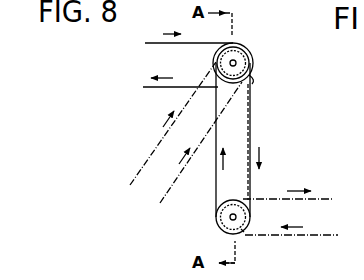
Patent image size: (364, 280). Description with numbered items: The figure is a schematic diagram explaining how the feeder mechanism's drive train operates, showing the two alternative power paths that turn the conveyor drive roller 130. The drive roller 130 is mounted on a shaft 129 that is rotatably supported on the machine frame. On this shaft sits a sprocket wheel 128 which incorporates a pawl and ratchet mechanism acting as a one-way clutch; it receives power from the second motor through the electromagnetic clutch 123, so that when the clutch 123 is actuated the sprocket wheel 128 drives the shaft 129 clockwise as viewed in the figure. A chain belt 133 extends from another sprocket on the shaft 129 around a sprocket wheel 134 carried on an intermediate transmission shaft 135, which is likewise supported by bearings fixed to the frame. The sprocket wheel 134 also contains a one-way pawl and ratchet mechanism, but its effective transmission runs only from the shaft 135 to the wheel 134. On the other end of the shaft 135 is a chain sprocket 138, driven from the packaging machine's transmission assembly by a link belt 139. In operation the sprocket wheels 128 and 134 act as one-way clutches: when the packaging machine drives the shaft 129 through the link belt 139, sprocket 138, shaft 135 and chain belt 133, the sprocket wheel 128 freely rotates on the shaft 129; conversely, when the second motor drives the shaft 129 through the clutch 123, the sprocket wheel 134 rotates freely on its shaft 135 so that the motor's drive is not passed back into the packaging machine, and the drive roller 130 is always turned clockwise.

The electromagnetic clutch 123 is at (153, 47).
The sprocket wheel 128 is at (252, 58).
The shaft 129 is at (230, 62).
The drive roller 130 is at (250, 74).
The chain belt 133 is at (251, 120).
The sprocket wheel 134 is at (224, 229).
The intermediate transmission shaft 135 is at (225, 207).
The chain sprocket 138 is at (246, 228).
The link belt 139 is at (323, 199).